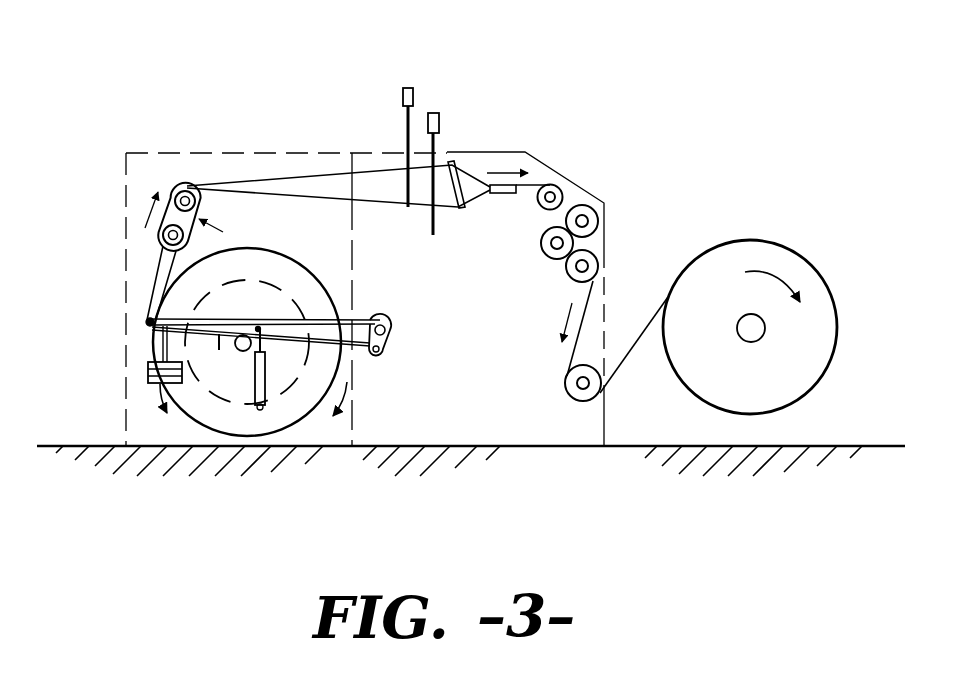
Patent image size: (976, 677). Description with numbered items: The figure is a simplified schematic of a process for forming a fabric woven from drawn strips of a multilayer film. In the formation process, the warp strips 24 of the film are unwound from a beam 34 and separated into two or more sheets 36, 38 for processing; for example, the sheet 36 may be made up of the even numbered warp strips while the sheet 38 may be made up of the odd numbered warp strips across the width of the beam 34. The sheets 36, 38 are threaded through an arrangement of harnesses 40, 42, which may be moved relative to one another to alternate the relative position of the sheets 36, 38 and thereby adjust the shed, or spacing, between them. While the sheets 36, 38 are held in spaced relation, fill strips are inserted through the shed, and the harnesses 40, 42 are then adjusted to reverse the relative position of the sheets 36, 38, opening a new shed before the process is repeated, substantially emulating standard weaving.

The warp strips 24 is at (180, 186).
The beam 34 is at (294, 425).
The sheet 36 is at (263, 180).
The sheet 38 is at (313, 196).
The harness 40 is at (410, 87).
The harness 42 is at (435, 112).